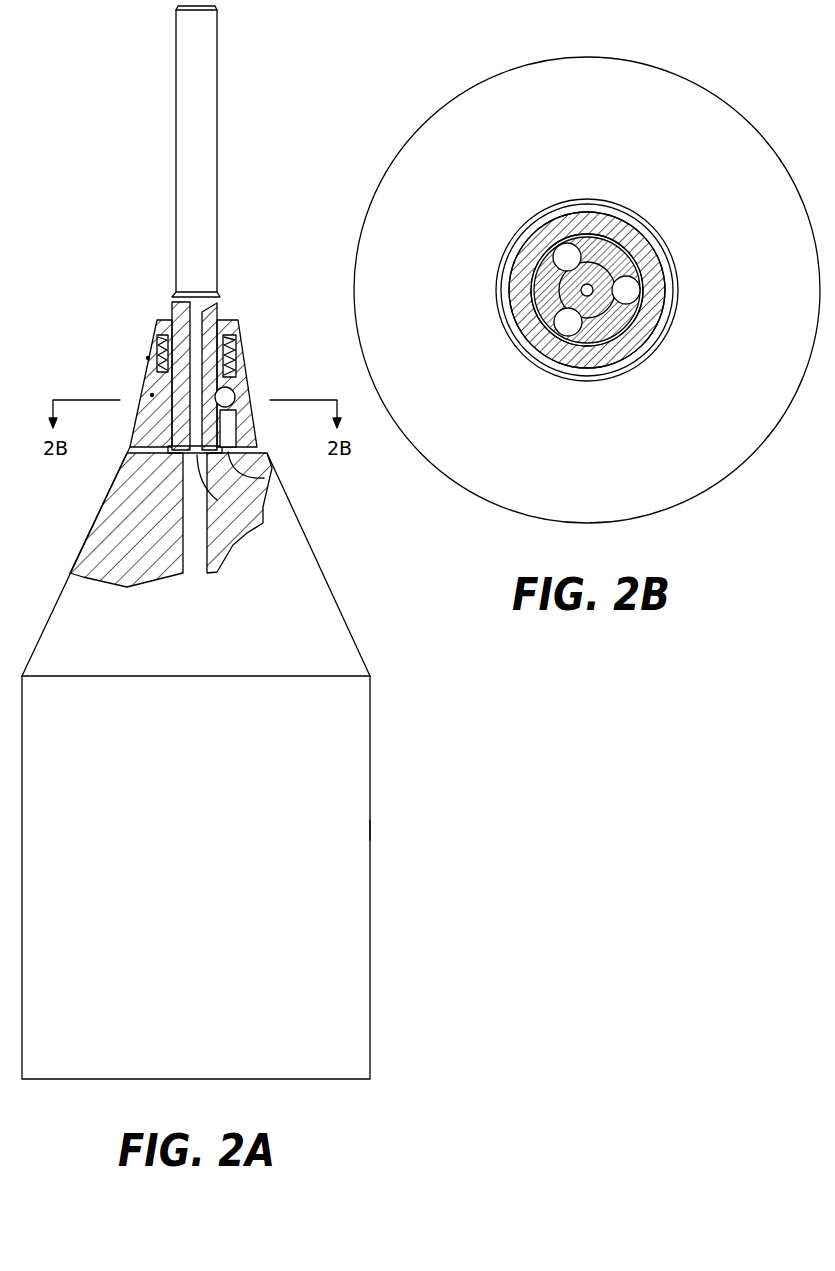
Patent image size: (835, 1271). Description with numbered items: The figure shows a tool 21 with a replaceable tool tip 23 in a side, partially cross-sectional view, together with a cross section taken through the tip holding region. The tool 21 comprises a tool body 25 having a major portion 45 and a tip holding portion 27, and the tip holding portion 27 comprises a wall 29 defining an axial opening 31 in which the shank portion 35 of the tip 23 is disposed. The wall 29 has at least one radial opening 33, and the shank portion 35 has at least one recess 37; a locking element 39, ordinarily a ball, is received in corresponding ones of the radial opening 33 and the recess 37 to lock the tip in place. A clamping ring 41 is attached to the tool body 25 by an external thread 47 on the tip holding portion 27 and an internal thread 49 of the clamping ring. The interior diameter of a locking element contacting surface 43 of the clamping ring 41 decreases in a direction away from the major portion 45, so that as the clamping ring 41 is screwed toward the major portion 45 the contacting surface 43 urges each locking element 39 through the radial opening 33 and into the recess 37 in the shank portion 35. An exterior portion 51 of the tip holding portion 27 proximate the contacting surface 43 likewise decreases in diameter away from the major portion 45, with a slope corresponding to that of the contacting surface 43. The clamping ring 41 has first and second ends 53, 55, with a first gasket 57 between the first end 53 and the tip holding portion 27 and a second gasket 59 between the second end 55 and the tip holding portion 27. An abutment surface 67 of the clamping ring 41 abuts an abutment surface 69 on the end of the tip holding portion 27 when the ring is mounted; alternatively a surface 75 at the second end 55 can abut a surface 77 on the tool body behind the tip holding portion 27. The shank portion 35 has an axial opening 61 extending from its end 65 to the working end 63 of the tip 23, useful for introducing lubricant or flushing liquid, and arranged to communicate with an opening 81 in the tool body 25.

In FIG. 2A, the tool 21 is at (118, 211).
In FIG. 2B, the tool 21 is at (690, 56).
In FIG. 2A, the tool tip 23 is at (222, 218).
In FIG. 2A, the tool body 25 is at (398, 716).
In FIG. 2B, the tool body 25 is at (446, 95).
In FIG. 2A, the tip holding portion 27 is at (152, 395).
In FIG. 2B, the tip holding portion 27 is at (623, 328).
In FIG. 2A, the wall 29 is at (148, 358).
In FIG. 2A, the axial opening 31 is at (163, 380).
In FIG. 2A, the radial opening 33 is at (230, 377).
In FIG. 2B, the radial opening 33 is at (536, 272).
In FIG. 2A, the shank portion 35 is at (156, 297).
In FIG. 2B, the shank portion 35 is at (555, 294).
In FIG. 2B, the recess 37 is at (563, 253).
In FIG. 2A, the locking element 39 is at (232, 398).
In FIG. 2B, the locking element 39 is at (565, 255).
In FIG. 2B, the clamping ring 41 is at (567, 208).
In FIG. 2A, the locking element contacting surface 43 is at (243, 410).
In FIG. 2B, the locking element contacting surface 43 is at (594, 240).
In FIG. 2A, the major portion 45 is at (372, 832).
In FIG. 2B, the major portion 45 is at (515, 58).
In FIG. 2A, the external thread 47 is at (237, 363).
In FIG. 2A, the internal thread 49 is at (240, 347).
In FIG. 2A, the exterior portion 51 is at (140, 413).
In FIG. 2A, the first end 53 is at (163, 320).
In FIG. 2A, the second end 55 is at (130, 445).
In FIG. 2A, the first gasket 57 is at (207, 310).
In FIG. 2A, the second gasket 59 is at (238, 478).
In FIG. 2A, the axial opening 61 is at (205, 497).
In FIG. 2B, the axial opening 61 is at (598, 338).
In FIG. 2A, the working end 63 is at (218, 18).
In FIG. 2A, the end 65 is at (163, 480).
In FIG. 2A, the abutment surface 67 is at (152, 343).
In FIG. 2A, the abutment surface 69 is at (236, 323).
In FIG. 2A, the surface 75 is at (233, 441).
In FIG. 2A, the surface 77 is at (240, 428).
In FIG. 2B, the surface 77 is at (582, 371).
In FIG. 2A, the opening 81 is at (193, 510).